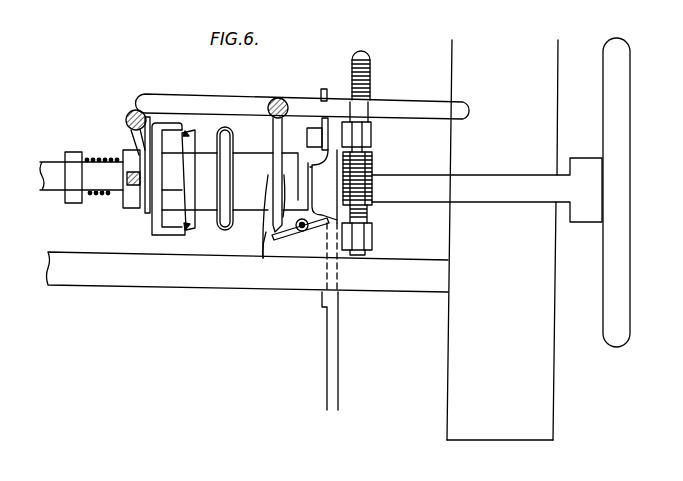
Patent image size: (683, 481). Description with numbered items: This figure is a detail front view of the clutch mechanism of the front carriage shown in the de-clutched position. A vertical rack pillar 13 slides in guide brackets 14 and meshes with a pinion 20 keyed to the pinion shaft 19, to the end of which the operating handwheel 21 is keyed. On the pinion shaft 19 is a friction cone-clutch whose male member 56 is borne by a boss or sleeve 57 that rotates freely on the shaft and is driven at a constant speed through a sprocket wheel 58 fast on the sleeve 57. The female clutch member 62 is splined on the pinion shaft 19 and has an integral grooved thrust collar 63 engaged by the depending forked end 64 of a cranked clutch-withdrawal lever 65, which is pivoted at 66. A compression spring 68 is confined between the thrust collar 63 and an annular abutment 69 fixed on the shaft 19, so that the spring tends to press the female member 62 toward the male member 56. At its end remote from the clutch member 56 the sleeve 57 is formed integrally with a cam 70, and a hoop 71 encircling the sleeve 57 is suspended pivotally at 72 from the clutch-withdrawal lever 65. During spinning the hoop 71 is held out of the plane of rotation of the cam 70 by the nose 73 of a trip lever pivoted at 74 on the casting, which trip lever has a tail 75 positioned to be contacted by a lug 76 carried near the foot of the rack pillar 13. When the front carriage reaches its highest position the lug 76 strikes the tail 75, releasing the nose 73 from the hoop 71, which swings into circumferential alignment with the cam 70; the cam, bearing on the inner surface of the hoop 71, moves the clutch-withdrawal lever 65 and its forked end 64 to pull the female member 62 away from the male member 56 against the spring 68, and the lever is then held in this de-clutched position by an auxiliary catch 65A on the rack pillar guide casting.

The rack pillar 13 is at (372, 82).
The guide bracket 14 is at (373, 133).
The pinion shaft 19 is at (425, 190).
The pinion 20 is at (375, 166).
The operating handwheel 21 is at (612, 143).
The male clutch member 56 is at (186, 230).
The boss or sleeve 57 is at (255, 204).
The sprocket wheel 58 is at (220, 232).
The female clutch member 62 is at (158, 232).
The thrust collar 63 is at (132, 210).
The depending forked end 64 is at (132, 143).
The clutch-withdrawal lever 65 is at (243, 105).
The auxiliary catch 65A is at (325, 92).
The pivot 66 is at (132, 108).
The compression spring 68 is at (105, 196).
The annular abutment 69 is at (73, 204).
The cam 70 is at (265, 262).
The hoop 71 is at (273, 134).
The pivot 72 is at (276, 99).
The nose 73 is at (277, 243).
The pivot 74 is at (302, 258).
The tail 75 is at (317, 207).
The lug 76 is at (328, 245).